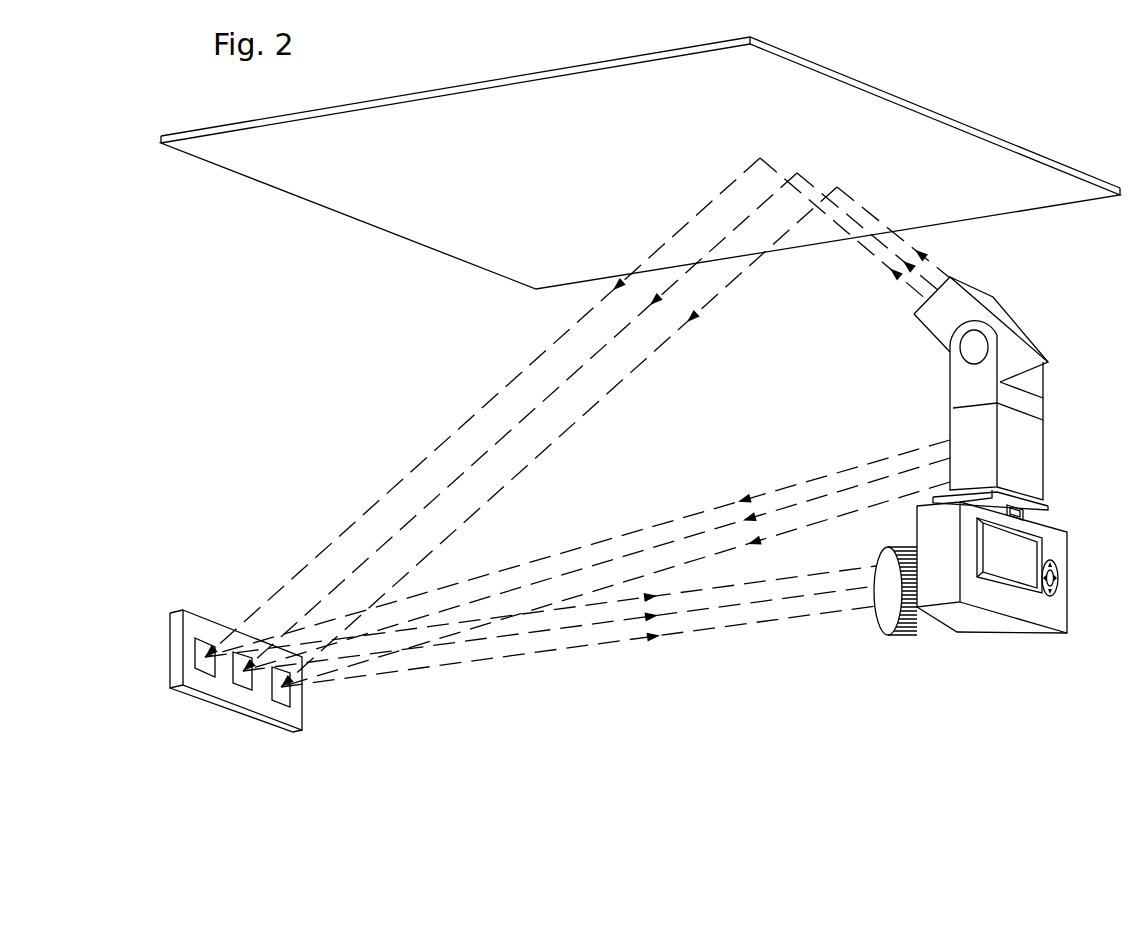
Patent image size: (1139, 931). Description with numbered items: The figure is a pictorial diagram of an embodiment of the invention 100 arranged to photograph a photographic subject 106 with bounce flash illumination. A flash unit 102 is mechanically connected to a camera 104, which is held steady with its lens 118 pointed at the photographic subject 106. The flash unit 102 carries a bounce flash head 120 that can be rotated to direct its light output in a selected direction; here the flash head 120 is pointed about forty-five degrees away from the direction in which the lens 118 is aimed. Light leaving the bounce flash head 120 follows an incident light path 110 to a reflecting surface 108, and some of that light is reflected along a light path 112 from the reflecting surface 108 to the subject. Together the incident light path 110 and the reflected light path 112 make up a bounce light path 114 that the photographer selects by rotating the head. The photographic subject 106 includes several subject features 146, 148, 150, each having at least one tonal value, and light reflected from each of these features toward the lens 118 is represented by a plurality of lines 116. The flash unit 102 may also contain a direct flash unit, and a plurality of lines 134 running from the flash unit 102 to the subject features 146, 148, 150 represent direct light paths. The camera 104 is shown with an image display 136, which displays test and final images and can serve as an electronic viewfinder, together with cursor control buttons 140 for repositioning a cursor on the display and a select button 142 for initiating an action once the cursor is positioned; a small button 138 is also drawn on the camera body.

The embodiment of the invention 100 is at (1068, 289).
The flash unit 102 is at (1043, 435).
The camera 104 is at (987, 588).
The photographic subject 106 is at (238, 661).
The reflecting surface 108 is at (1033, 196).
The light path 110 is at (860, 240).
The light path 112 is at (855, 344).
The bounce light path 114 is at (577, 422).
The lines 116 is at (637, 636).
The lens 118 is at (903, 636).
The bounce flash head 120 is at (1005, 311).
The lines 134 is at (792, 483).
The image display 136 is at (1010, 580).
The button 138 is at (1024, 513).
The cursor control buttons 140 is at (1089, 554).
The select button 142 is at (1058, 573).
The subject feature 146 is at (282, 708).
The subject feature 148 is at (243, 691).
The subject feature 150 is at (203, 678).